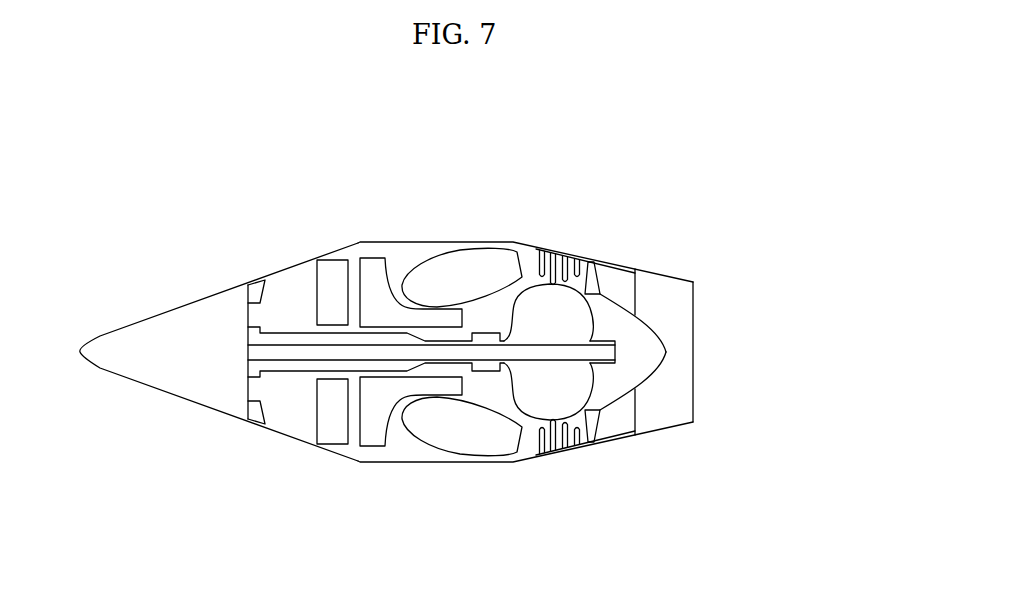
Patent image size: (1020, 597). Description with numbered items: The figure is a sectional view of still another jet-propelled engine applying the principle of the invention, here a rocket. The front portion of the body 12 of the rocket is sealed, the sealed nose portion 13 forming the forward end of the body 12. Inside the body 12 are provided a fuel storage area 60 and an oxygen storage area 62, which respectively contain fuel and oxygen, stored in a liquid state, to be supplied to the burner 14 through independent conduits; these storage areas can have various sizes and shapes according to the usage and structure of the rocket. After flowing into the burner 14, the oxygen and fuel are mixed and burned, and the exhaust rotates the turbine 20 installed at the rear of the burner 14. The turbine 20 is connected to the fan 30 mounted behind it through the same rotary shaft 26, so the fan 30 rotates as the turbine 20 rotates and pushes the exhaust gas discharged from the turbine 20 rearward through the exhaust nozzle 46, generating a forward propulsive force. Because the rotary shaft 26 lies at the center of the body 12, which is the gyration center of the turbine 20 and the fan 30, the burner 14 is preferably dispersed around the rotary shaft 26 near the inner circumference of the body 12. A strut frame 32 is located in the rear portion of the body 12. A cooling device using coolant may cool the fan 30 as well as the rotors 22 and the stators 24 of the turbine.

The body 12 is at (538, 247).
The nose cone 13 is at (140, 372).
The burner 14 is at (500, 447).
The turbine 20 is at (556, 241).
The rotors 22 is at (577, 452).
The stators 24 is at (613, 440).
The rotary shaft 26 is at (290, 353).
The fan 30 is at (590, 263).
The strut frame 32 is at (623, 277).
The exhaust nozzle 46 is at (693, 282).
The fuel storage area 60 is at (373, 437).
The oxygen storage area 62 is at (331, 437).